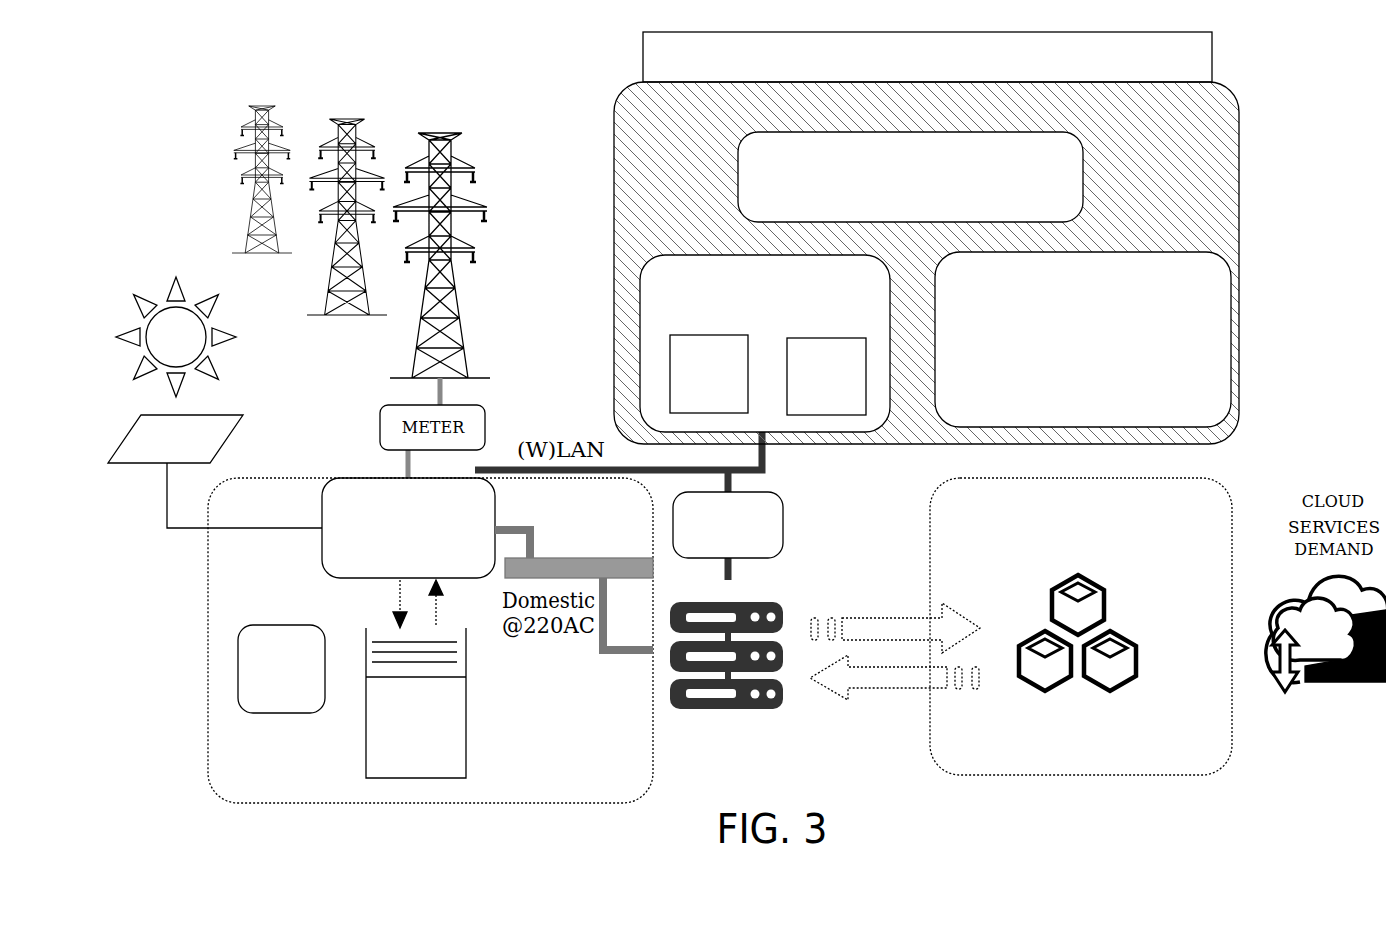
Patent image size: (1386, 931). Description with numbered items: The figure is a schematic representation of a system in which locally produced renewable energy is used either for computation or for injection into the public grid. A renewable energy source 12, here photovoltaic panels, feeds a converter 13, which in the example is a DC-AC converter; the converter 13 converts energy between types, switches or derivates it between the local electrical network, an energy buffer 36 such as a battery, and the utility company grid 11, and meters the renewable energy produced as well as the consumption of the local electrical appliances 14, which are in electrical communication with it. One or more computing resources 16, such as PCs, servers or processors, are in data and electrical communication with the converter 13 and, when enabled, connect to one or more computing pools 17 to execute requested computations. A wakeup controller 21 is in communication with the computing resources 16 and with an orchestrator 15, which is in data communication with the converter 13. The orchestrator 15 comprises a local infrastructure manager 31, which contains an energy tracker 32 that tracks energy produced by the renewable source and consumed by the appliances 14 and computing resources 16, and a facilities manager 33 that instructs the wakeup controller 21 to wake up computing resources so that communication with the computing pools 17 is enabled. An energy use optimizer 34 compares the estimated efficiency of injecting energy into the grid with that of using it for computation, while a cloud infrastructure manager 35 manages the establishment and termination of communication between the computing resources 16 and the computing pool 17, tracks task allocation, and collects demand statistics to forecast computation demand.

The utility company grid 11 is at (240, 130).
The renewable energy source 12 is at (107, 455).
The converter 13 is at (408, 528).
The electrical appliances 14 is at (322, 553).
The orchestrator 15 is at (926, 237).
The computing resources 16 is at (762, 712).
The computing pools 17 is at (1081, 626).
The wakeup controller 21 is at (728, 525).
The local infrastructure manager 31 is at (765, 343).
The energy tracker 32 is at (709, 374).
The facilities manager 33 is at (826, 376).
The energy use optimizer 34 is at (910, 177).
The cloud infrastructure manager 35 is at (1083, 339).
The energy buffer 36 is at (416, 679).